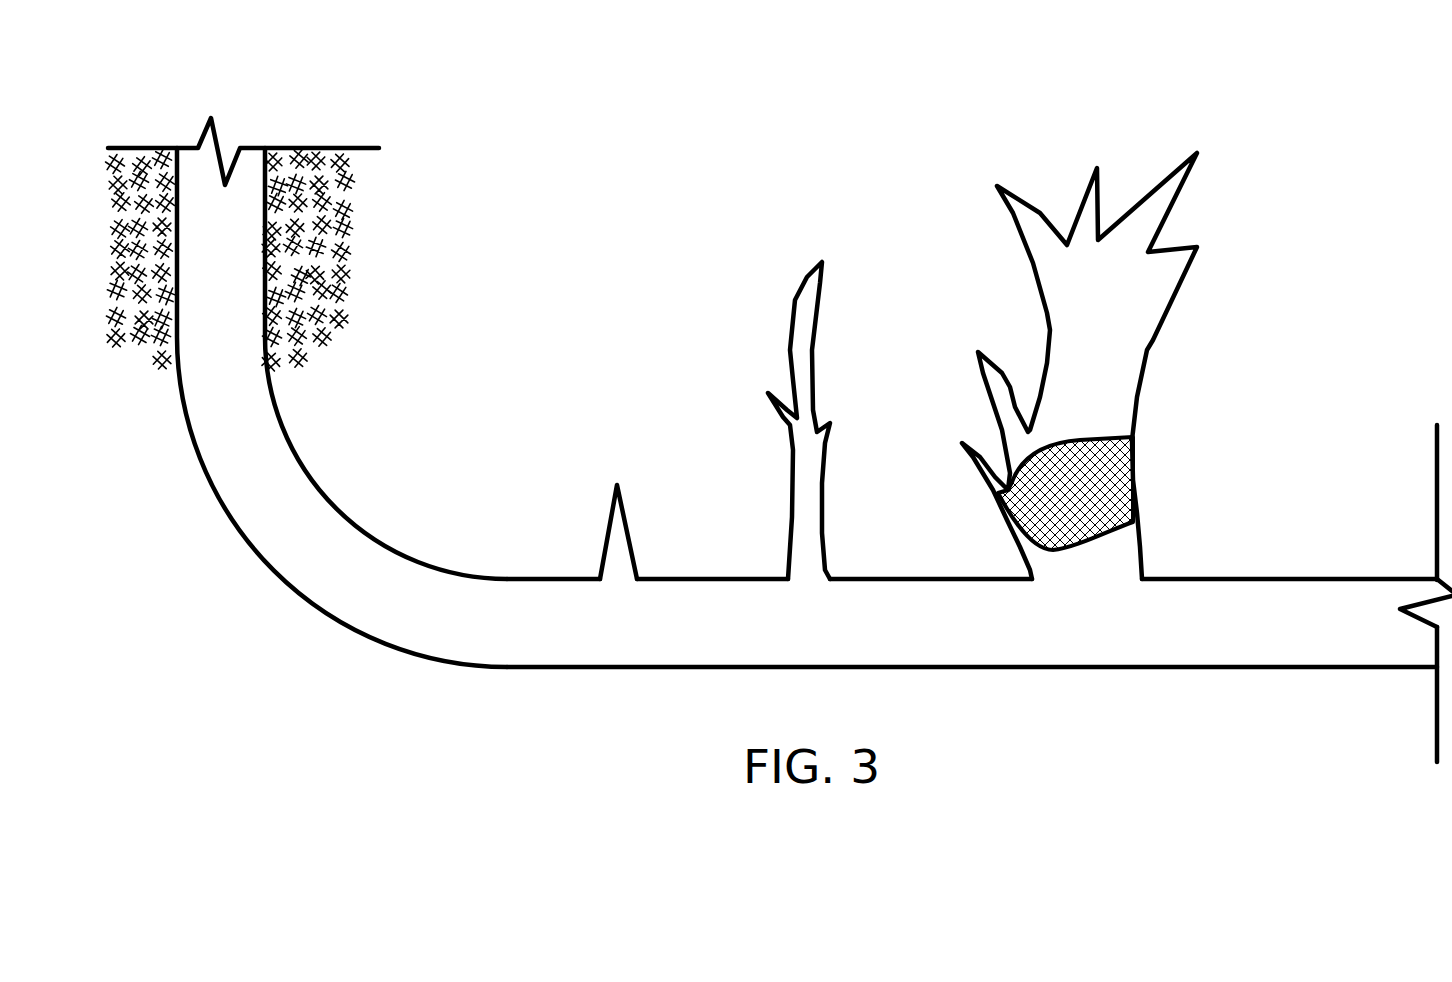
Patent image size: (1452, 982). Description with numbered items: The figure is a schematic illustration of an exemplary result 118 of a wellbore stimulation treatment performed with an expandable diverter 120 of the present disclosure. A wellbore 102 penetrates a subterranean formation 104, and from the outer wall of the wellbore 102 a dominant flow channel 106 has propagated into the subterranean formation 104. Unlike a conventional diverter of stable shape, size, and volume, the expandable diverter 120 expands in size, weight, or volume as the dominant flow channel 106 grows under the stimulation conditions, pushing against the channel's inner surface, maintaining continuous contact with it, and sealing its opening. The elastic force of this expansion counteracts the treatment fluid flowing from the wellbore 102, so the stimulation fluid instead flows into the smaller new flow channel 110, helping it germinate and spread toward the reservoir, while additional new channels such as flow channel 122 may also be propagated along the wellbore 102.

The wellbore 102 is at (213, 175).
The subterranean formation 104 is at (303, 243).
The dominant flow channel 106 is at (1007, 217).
The new flow channel 110 is at (793, 518).
The exemplary result 118 is at (483, 188).
The expandable diverter 120 is at (1112, 490).
The flow channel 122 is at (607, 518).